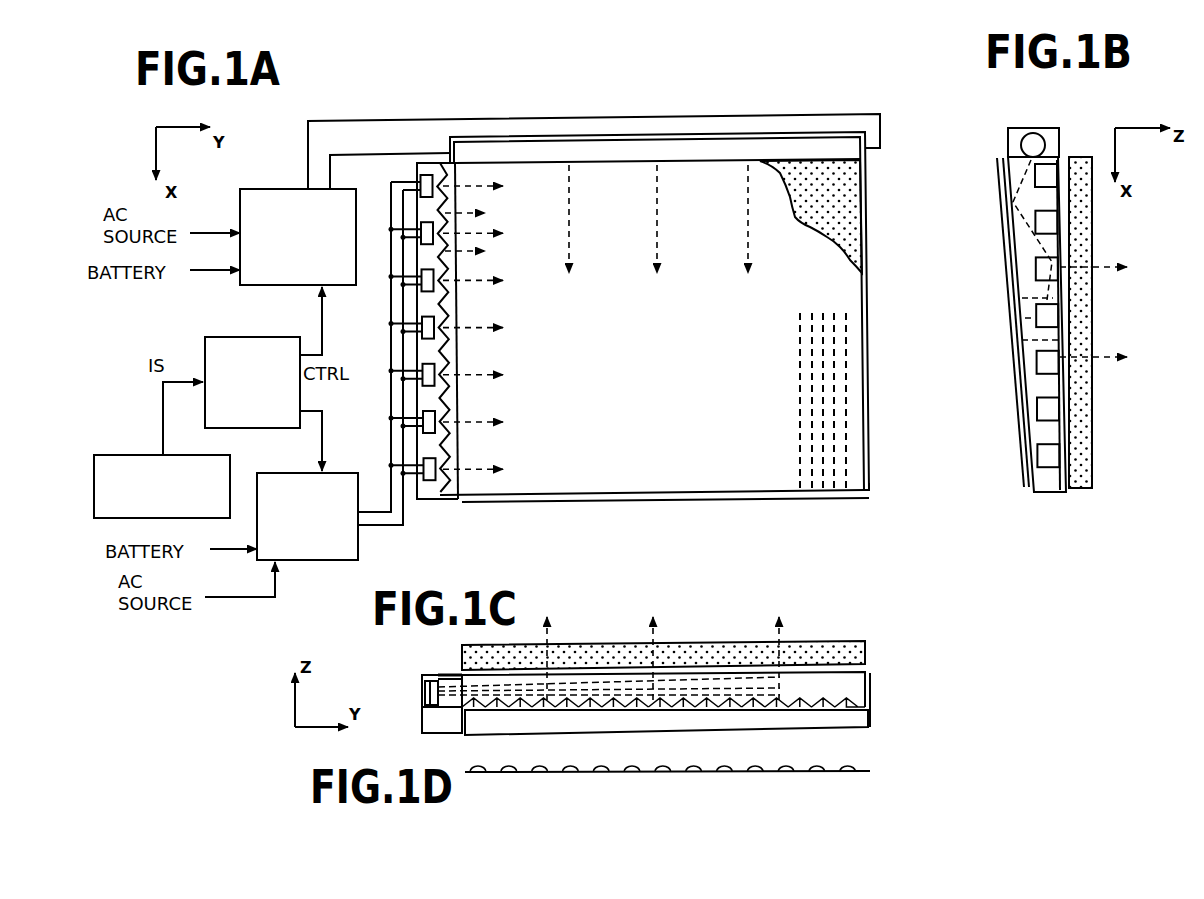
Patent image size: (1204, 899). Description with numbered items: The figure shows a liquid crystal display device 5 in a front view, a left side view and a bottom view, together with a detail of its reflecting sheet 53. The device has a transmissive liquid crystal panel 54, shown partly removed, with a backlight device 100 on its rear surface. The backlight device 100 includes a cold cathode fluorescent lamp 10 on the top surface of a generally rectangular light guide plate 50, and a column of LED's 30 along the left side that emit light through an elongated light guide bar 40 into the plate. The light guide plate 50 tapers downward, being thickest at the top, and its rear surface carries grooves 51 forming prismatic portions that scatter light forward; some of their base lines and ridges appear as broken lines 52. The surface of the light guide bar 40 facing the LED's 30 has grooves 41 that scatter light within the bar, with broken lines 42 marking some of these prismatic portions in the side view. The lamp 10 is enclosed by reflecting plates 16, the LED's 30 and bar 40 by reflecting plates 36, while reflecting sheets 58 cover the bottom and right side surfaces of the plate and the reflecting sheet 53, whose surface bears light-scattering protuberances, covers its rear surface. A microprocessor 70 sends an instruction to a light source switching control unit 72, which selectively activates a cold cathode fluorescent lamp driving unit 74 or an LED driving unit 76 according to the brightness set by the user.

In FIG. 1A, the liquid crystal display device 5 is at (500, 108).
In FIG. 1B, the liquid crystal display device 5 is at (1078, 537).
In FIG. 1C, the liquid crystal display device 5 is at (752, 630).
In FIG. 1A, the cold cathode fluorescent lamp 10 is at (745, 146).
In FIG. 1B, the cold cathode fluorescent lamp 10 is at (1030, 145).
In FIG. 1A, the reflecting plates 16 is at (792, 133).
In FIG. 1B, the reflecting plates 16 is at (1025, 128).
In FIG. 1A, the LED's 30 is at (424, 466).
In FIG. 1B, the LED's 30 is at (1043, 475).
In FIG. 1C, the LED's 30 is at (425, 692).
In FIG. 1A, the reflecting plates 36 is at (422, 500).
In FIG. 1B, the reflecting plates 36 is at (1050, 493).
In FIG. 1C, the reflecting plates 36 is at (422, 708).
In FIG. 1A, the light guide bar 40 is at (450, 478).
In FIG. 1B, the light guide bar 40 is at (1025, 478).
In FIG. 1C, the light guide bar 40 is at (456, 676).
In FIG. 1A, the grooves 41 is at (456, 498).
In FIG. 1B, the broken lines 42 is at (1037, 366).
In FIG. 1A, the light guide plate 50 is at (737, 483).
In FIG. 1C, the light guide plate 50 is at (866, 686).
In FIG. 1C, the grooves 51 is at (850, 706).
In FIG. 1A, the broken lines 52 is at (835, 430).
In FIG. 1B, the reflecting sheet 53 is at (1008, 278).
In FIG. 1D, the reflecting sheet 53 is at (862, 771).
In FIG. 1A, the transmissive liquid crystal panel 54 is at (830, 196).
In FIG. 1B, the transmissive liquid crystal panel 54 is at (1079, 156).
In FIG. 1C, the transmissive liquid crystal panel 54 is at (850, 645).
In FIG. 1A, the reflecting sheets 58 is at (870, 483).
In FIG. 1C, the reflecting sheets 58 is at (870, 675).
In FIG. 1A, the microprocessor 70 is at (151, 513).
In FIG. 1A, the light source switching control unit 72 is at (241, 424).
In FIG. 1A, the cold cathode fluorescent lamp driving unit 74 is at (287, 276).
In FIG. 1A, the LED driving unit 76 is at (294, 560).
In FIG. 1A, the backlight device 100 is at (872, 338).
In FIG. 1B, the backlight device 100 is at (982, 224).
In FIG. 1C, the backlight device 100 is at (1000, 712).